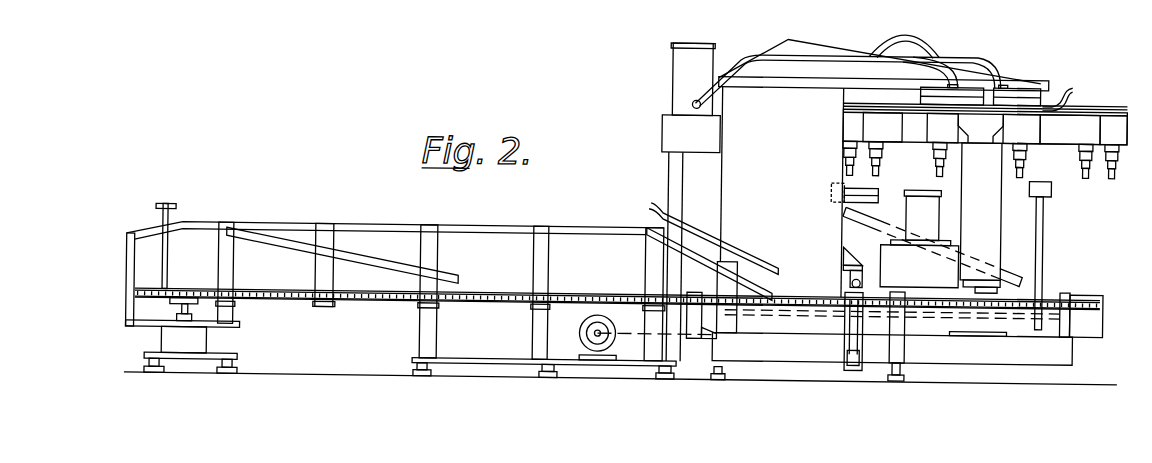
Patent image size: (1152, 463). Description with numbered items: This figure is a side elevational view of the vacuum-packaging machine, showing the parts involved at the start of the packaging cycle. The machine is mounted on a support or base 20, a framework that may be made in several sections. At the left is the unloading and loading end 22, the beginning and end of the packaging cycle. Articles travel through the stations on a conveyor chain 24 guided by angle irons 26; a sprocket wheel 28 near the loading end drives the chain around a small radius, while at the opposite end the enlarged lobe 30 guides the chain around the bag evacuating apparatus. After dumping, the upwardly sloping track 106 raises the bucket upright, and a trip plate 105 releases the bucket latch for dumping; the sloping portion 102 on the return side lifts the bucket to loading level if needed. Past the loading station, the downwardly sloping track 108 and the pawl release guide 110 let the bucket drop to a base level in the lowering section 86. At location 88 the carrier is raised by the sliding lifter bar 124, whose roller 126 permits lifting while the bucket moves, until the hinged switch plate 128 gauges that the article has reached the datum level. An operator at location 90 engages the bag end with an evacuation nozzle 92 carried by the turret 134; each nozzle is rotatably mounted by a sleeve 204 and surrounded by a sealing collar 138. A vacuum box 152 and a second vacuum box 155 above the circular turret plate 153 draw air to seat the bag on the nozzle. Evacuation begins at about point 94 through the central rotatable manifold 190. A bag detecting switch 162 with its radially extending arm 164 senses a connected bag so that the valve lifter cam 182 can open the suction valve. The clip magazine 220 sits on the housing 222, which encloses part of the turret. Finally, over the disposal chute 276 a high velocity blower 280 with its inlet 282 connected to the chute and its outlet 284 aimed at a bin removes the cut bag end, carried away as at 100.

The support or base 20 is at (227, 341).
The unloading and loading end 22 is at (128, 270).
The conveyor chain 24 is at (362, 294).
The angle irons 26 is at (292, 286).
The sprocket wheel 28 is at (173, 287).
The lobe 30 is at (1075, 281).
The lowering section 86 is at (725, 377).
The raising location 88 is at (864, 364).
The operator location 90 is at (1015, 374).
The evacuation nozzle 92 is at (1086, 167).
The evacuation start point 94 is at (1108, 374).
The excess material carry-away point 100 is at (867, 172).
The sloping portion 102 is at (352, 247).
The trip plate 105 is at (168, 199).
The upwardly sloping track 106 is at (143, 230).
The downwardly sloping track 108 is at (717, 252).
The pawl release guide 110 is at (703, 250).
The sliding lifter bar 124 is at (846, 283).
The roller 126 is at (848, 253).
The hinged switch plate 128 is at (842, 197).
The turret 134 is at (1062, 129).
The sealing collar 138 is at (1022, 163).
The vacuum box 152 is at (967, 81).
The circular turret plate 153 is at (1082, 97).
The second vacuum box 155 is at (1022, 78).
The bag detecting switch 162 is at (1034, 186).
The radially extending arm 164 is at (1050, 186).
The valve lifter cam 182 is at (1058, 84).
The central rotatable manifold 190 is at (966, 172).
The sleeve 204 is at (1112, 134).
The clip magazine 220 is at (918, 35).
The housing 222 is at (807, 63).
The disposal chute 276 is at (836, 173).
The high velocity blower 280 is at (905, 268).
The blower inlet 282 is at (892, 208).
The blower outlet 284 is at (1025, 255).